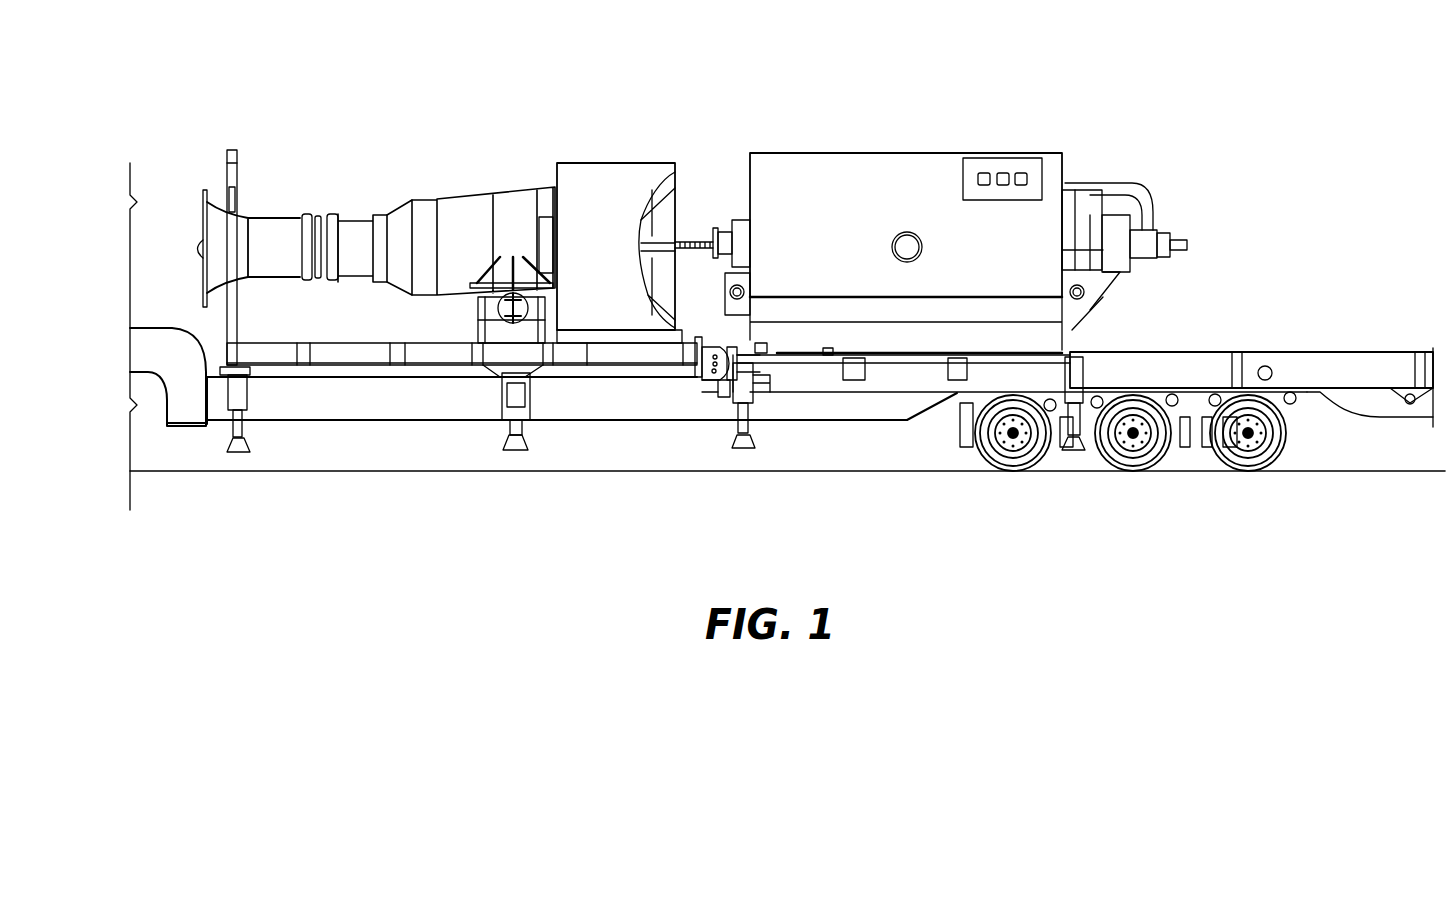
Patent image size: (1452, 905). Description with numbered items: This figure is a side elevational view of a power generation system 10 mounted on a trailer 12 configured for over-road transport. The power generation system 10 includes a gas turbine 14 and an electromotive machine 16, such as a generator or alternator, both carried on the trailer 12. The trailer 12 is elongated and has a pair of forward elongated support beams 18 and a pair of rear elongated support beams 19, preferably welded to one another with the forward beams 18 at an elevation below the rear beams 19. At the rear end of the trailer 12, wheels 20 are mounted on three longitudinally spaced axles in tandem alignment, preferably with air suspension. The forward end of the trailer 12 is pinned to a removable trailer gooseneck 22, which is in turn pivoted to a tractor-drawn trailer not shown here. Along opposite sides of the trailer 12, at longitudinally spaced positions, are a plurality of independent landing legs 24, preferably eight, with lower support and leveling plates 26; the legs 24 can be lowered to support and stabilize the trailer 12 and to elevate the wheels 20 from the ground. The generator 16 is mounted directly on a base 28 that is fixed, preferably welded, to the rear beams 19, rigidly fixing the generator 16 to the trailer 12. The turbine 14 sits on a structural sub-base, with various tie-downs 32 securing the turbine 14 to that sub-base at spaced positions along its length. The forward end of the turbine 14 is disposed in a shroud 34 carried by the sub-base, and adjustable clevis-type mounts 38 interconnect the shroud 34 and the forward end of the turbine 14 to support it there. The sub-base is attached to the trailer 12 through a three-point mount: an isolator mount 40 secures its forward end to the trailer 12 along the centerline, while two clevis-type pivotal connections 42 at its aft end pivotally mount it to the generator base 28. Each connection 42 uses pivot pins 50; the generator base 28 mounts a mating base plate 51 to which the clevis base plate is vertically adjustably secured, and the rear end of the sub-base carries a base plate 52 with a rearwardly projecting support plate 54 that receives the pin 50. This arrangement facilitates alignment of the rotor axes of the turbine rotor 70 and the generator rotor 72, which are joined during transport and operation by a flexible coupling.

The power generation system 10 is at (672, 204).
The trailer 12 is at (1076, 446).
The gas turbine 14 is at (470, 200).
The electromotive machine 16 is at (830, 158).
The forward elongated support beams 18 is at (398, 395).
The rear elongated support beams 19 is at (1195, 358).
The wheels 20 is at (1040, 462).
The removable trailer gooseneck 22 is at (168, 328).
The independent landing legs 24 is at (753, 427).
The lower support and leveling plates 26 is at (513, 455).
The base 28 is at (818, 358).
The tie-downs 32 is at (483, 275).
The shroud 34 is at (228, 160).
The adjustable clevis-type mounts 38 is at (240, 203).
The isolator mount 40 is at (250, 372).
The pivotal connections 42 is at (722, 396).
The pivot pins 50 is at (702, 378).
The mating base plate 51 is at (753, 383).
The base plate 52 is at (697, 345).
The rearwardly projecting support plate 54 is at (705, 347).
The turbine rotor 70 is at (660, 238).
The generator rotor 72 is at (733, 220).